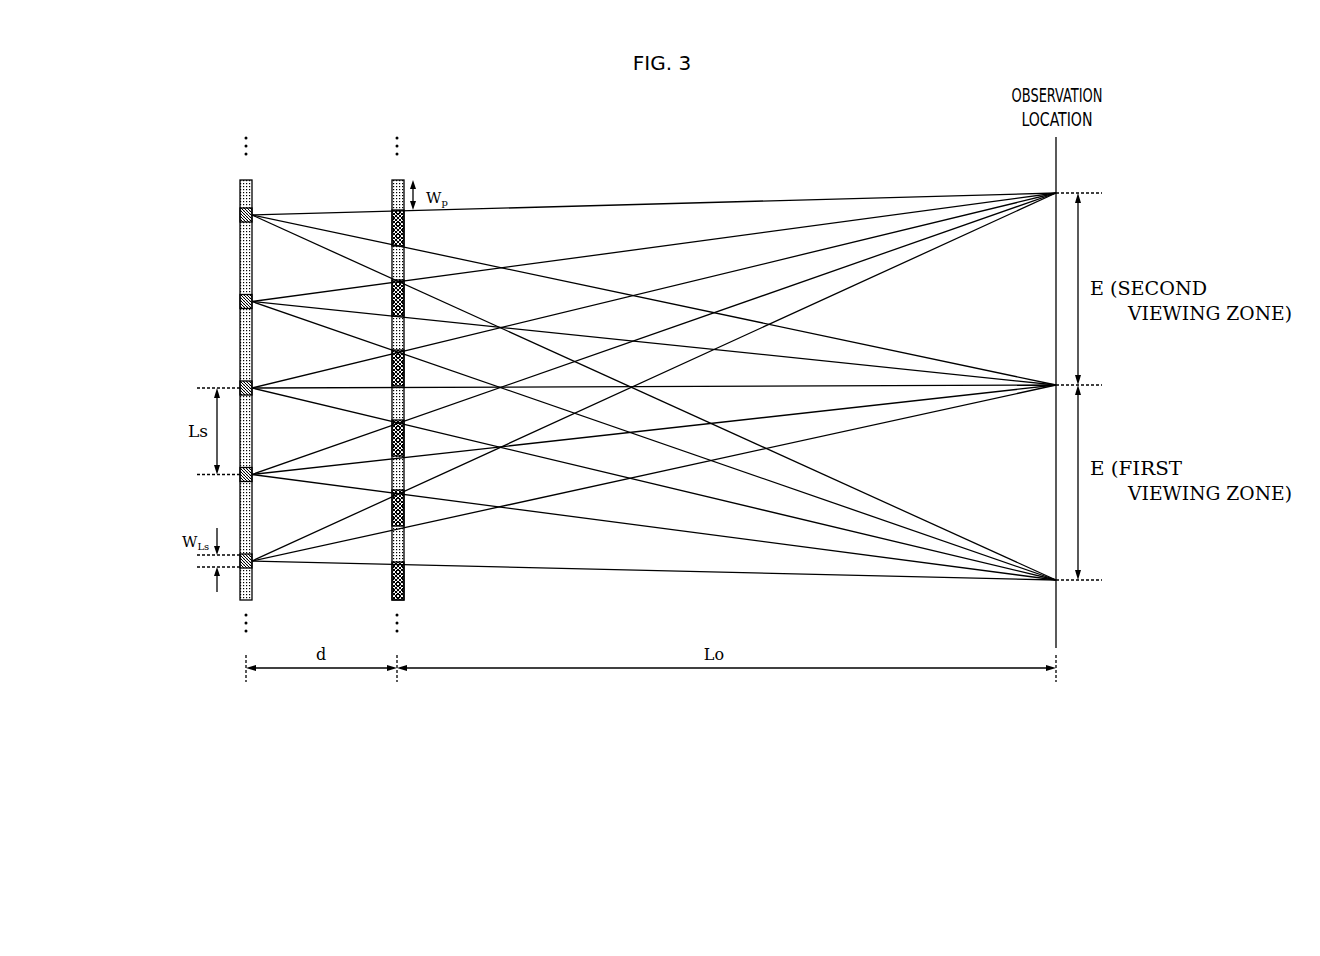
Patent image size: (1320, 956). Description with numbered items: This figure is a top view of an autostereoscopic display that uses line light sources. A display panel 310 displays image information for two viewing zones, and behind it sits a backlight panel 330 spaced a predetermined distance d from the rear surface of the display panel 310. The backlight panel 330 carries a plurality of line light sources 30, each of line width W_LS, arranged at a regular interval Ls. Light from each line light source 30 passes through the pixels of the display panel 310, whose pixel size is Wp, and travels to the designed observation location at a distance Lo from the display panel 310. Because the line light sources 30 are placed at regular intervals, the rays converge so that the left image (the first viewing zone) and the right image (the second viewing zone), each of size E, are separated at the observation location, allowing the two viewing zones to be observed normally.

The line light source 30 is at (232, 217).
The display panel 310 is at (397, 370).
The backlight panel 330 is at (246, 370).